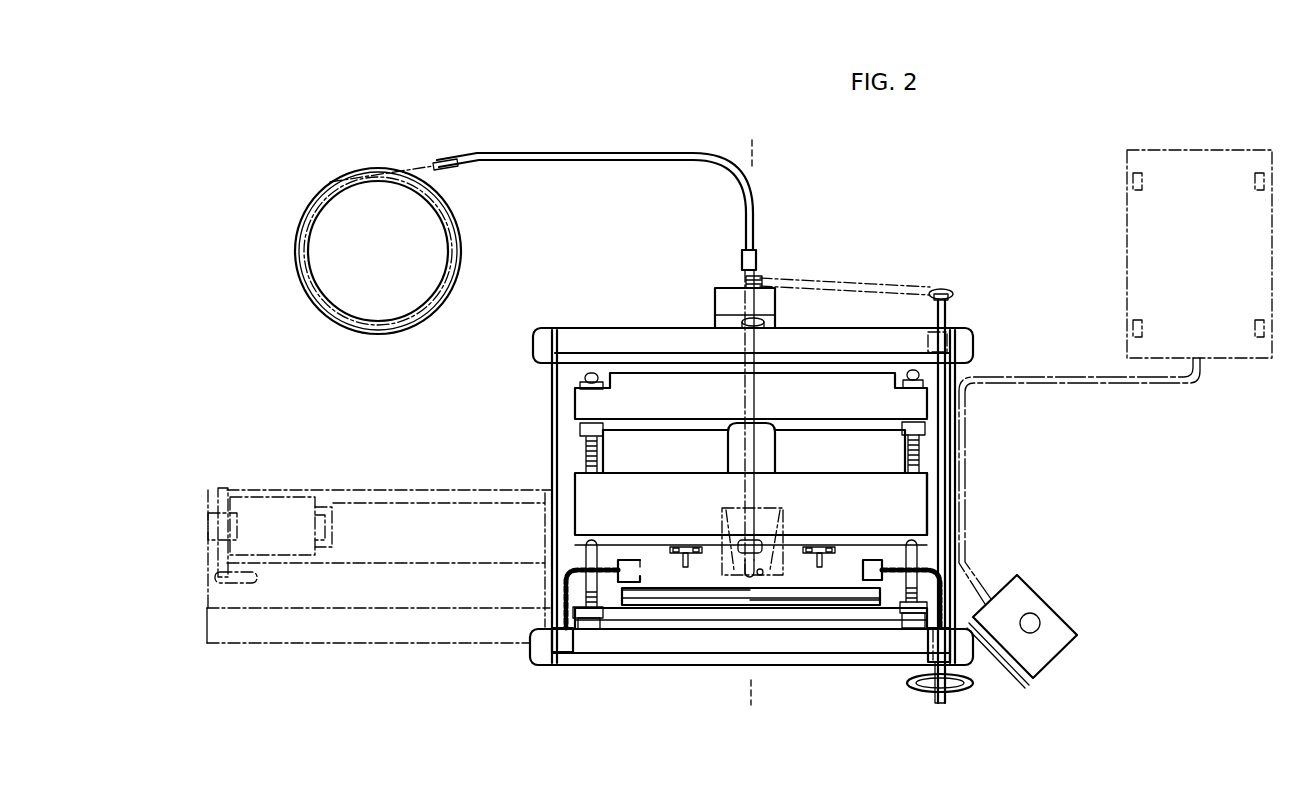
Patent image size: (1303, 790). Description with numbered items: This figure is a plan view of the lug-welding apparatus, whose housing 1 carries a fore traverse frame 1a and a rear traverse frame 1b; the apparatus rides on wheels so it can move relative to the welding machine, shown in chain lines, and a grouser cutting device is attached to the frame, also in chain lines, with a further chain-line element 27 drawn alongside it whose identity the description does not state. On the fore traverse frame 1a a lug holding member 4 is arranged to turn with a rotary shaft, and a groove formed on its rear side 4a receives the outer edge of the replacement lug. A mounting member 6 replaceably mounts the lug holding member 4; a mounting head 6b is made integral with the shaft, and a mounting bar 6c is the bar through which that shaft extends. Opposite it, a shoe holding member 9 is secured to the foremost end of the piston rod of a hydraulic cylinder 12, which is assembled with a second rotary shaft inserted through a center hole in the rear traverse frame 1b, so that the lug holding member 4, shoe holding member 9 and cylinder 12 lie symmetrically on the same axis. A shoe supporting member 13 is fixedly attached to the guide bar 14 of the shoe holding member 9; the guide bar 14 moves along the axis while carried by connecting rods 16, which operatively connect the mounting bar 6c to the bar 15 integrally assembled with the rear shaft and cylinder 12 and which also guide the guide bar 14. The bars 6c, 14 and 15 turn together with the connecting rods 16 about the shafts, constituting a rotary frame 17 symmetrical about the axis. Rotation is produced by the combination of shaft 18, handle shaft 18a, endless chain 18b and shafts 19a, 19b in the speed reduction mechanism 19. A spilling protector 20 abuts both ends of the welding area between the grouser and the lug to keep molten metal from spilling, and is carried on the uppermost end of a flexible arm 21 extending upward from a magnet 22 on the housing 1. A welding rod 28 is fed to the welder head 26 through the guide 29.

The housing 1 is at (737, 498).
The fore traverse frame 1a is at (695, 650).
The rear traverse frame 1b is at (650, 340).
The lug holding member 4 is at (810, 597).
The rear side of lug holding member 4a is at (712, 598).
The mounting member 6 is at (824, 618).
The mounting head 6b is at (830, 602).
The mounting bar 6c is at (640, 622).
The shoe holding member 9 is at (782, 520).
The hydraulic cylinder 12 is at (728, 455).
The shoe supporting member 13 is at (684, 566).
The guide bar 14 is at (653, 485).
The bar 15 is at (831, 407).
The connecting rods 16 is at (913, 465).
The rotary frame 17 is at (910, 497).
The shaft 18 is at (922, 690).
The handle shaft 18a is at (940, 530).
The endless chain 18b is at (858, 283).
The speed reduction mechanism 19 is at (733, 297).
The shaft of speed reduction mechanism 19a is at (762, 278).
The shaft of speed reduction mechanism 19b is at (766, 330).
The spilling protector 20 is at (627, 560).
The flexible arm 21 is at (572, 568).
The magnet 22 is at (563, 643).
The welder head 26 is at (757, 583).
The table 27 is at (290, 588).
The welding rod 28 is at (335, 182).
The guide 29 is at (593, 152).